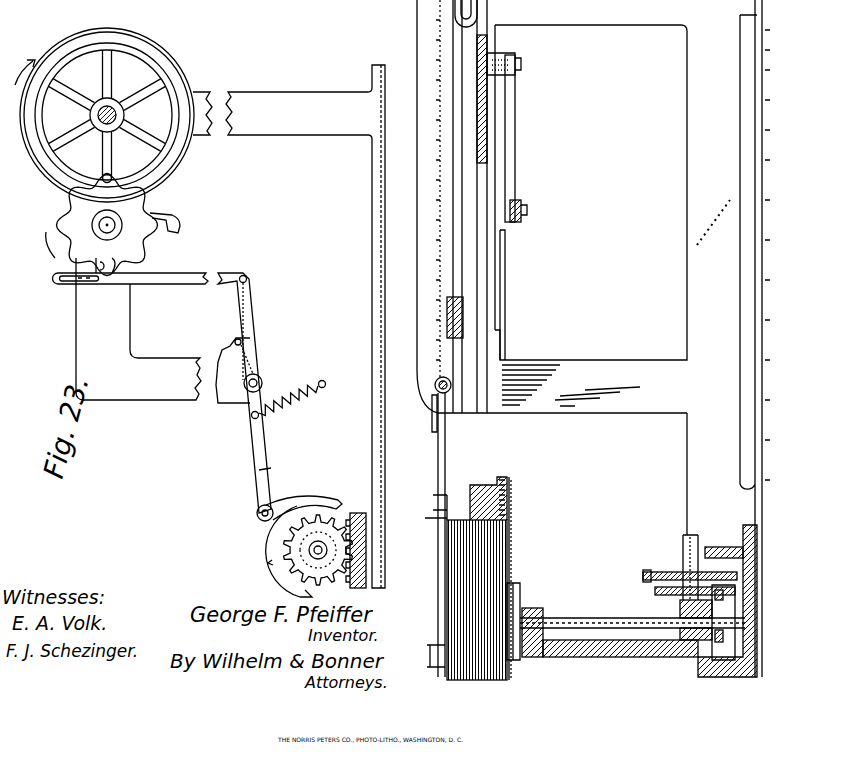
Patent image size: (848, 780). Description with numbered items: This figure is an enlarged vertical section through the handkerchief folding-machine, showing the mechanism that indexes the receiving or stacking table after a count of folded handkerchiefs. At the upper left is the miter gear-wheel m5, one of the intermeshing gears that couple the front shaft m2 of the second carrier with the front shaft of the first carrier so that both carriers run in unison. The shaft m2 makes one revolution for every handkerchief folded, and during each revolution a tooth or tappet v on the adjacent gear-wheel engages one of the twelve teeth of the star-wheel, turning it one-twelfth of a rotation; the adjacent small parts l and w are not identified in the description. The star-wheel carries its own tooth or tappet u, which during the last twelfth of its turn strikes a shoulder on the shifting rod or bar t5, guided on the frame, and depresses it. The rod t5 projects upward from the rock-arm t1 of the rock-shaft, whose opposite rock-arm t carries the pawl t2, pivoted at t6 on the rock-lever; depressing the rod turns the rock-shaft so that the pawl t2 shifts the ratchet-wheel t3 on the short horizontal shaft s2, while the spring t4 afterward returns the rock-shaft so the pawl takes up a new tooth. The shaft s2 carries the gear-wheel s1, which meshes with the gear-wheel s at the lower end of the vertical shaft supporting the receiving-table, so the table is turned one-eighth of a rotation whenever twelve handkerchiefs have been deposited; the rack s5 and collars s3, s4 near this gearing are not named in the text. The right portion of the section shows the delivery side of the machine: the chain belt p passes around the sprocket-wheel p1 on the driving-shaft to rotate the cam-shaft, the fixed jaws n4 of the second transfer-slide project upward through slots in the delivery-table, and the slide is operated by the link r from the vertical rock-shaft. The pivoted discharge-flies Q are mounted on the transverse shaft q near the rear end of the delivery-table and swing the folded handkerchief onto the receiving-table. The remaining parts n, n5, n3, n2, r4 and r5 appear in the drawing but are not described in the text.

The miter gear-wheel m5 is at (104, 102).
The front shaft m2 is at (100, 95).
The tooth or tappet v is at (104, 175).
The tooth or tappet u is at (96, 255).
The latch l is at (164, 226).
The pawl w is at (108, 270).
The shifting rod or bar t5 is at (190, 284).
The rock-arm t1 is at (251, 305).
The pivot t6 is at (246, 383).
The spring t4 is at (290, 410).
The rock-arm t is at (256, 468).
The pawl t2 is at (299, 498).
The ratchet-wheel t3 is at (272, 562).
The rack and gear s5 is at (325, 562).
The bed plate n is at (573, 267).
The guide n5 is at (452, 18).
The fixed jaws n4 is at (495, 40).
The chain belt p is at (514, 118).
The sprocket-wheel p1 is at (522, 214).
The bar n3 is at (506, 290).
The block n2 is at (458, 340).
The transverse shaft q is at (437, 380).
The link r is at (430, 535).
The bracket r4 is at (432, 507).
The pivoted discharge-flies Q is at (445, 575).
The rack r5 is at (506, 496).
The gear-wheel s1 is at (600, 618).
The gear-wheel s is at (735, 650).
The short horizontal shaft s2 is at (690, 533).
The collar s3 is at (679, 562).
The bearing strip s4 is at (668, 592).